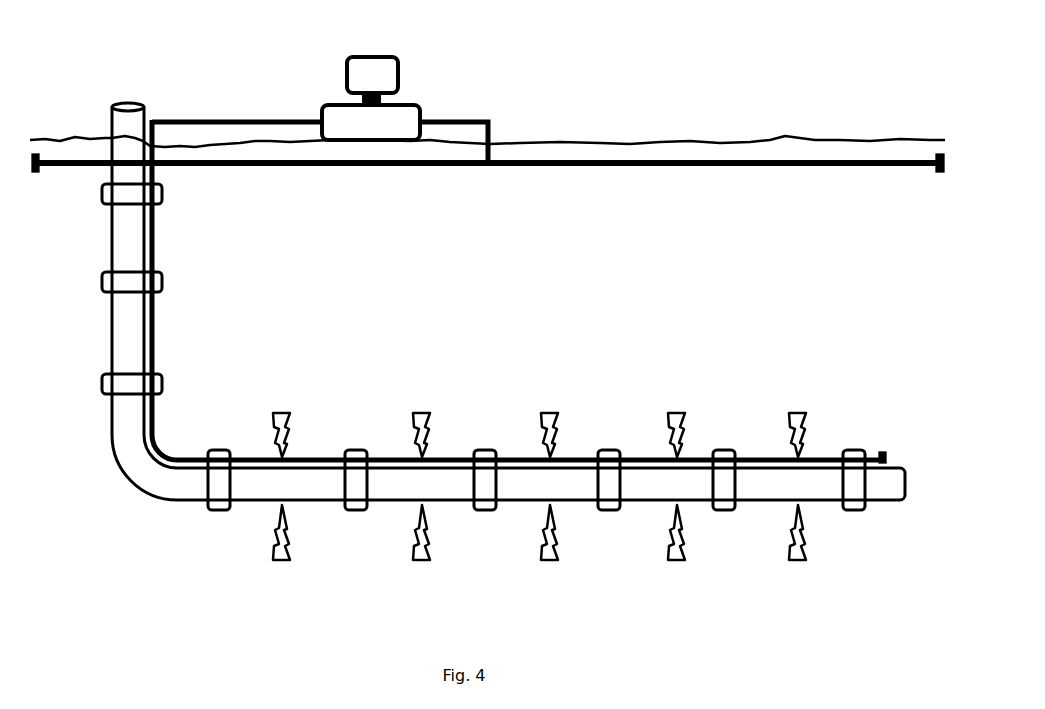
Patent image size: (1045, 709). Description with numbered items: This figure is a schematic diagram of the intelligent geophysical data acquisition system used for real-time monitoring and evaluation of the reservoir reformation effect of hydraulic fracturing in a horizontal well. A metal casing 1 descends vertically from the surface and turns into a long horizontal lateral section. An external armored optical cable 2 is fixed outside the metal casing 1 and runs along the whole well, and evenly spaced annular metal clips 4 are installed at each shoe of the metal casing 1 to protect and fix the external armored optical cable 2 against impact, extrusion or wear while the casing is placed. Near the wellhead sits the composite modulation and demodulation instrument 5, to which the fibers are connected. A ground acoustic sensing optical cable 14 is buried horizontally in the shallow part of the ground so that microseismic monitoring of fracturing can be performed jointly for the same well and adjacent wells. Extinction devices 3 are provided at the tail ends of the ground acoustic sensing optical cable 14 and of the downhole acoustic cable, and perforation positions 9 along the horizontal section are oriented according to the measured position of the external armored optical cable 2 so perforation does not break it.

The metal casing 1 is at (118, 463).
The external armored optical cable 2 is at (200, 120).
The extinction device 3 is at (37, 168).
The annular metal clip 4 is at (162, 195).
The composite modulation and demodulation instrument 5 is at (397, 103).
The perforation position 9 is at (300, 457).
The ground acoustic sensing optical cable 14 is at (763, 167).